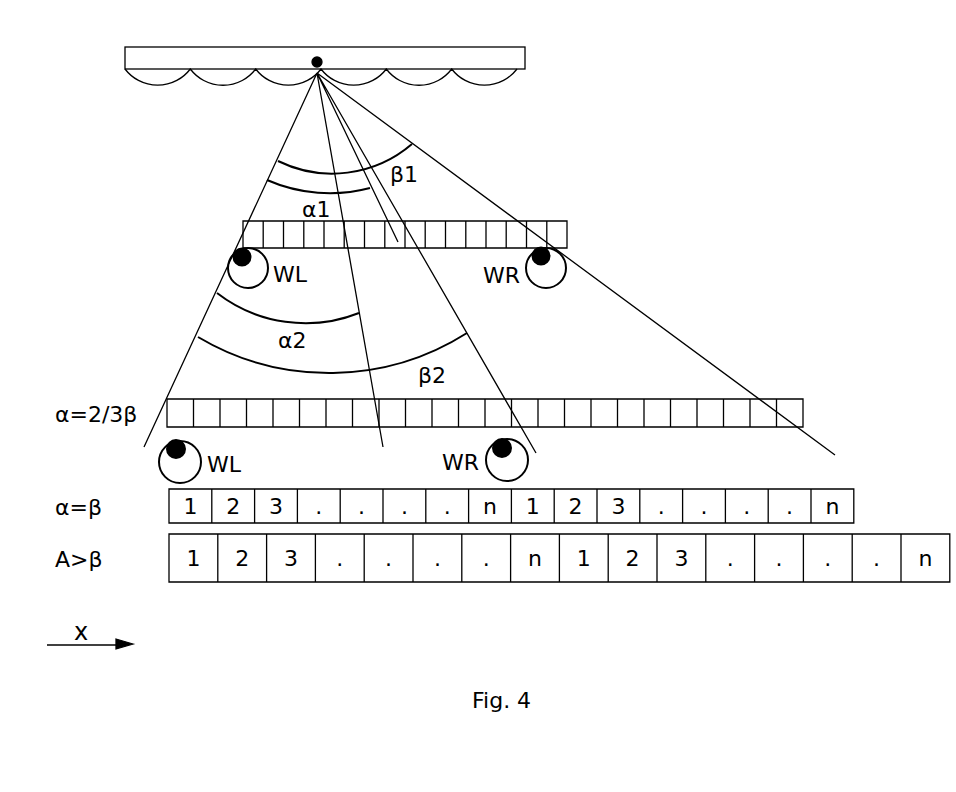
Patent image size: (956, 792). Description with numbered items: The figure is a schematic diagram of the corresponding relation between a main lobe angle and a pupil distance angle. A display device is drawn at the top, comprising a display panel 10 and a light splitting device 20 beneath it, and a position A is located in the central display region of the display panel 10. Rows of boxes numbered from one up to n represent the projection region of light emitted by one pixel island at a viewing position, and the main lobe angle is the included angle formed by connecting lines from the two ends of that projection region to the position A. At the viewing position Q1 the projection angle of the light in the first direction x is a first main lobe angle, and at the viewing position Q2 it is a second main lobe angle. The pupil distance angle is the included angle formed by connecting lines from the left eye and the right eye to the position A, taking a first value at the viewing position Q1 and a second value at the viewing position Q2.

The display panel 10 is at (510, 54).
The light splitting device 20 is at (508, 80).
The position A is at (320, 58).
The viewing position Q1 is at (604, 236).
The viewing position Q2 is at (829, 411).